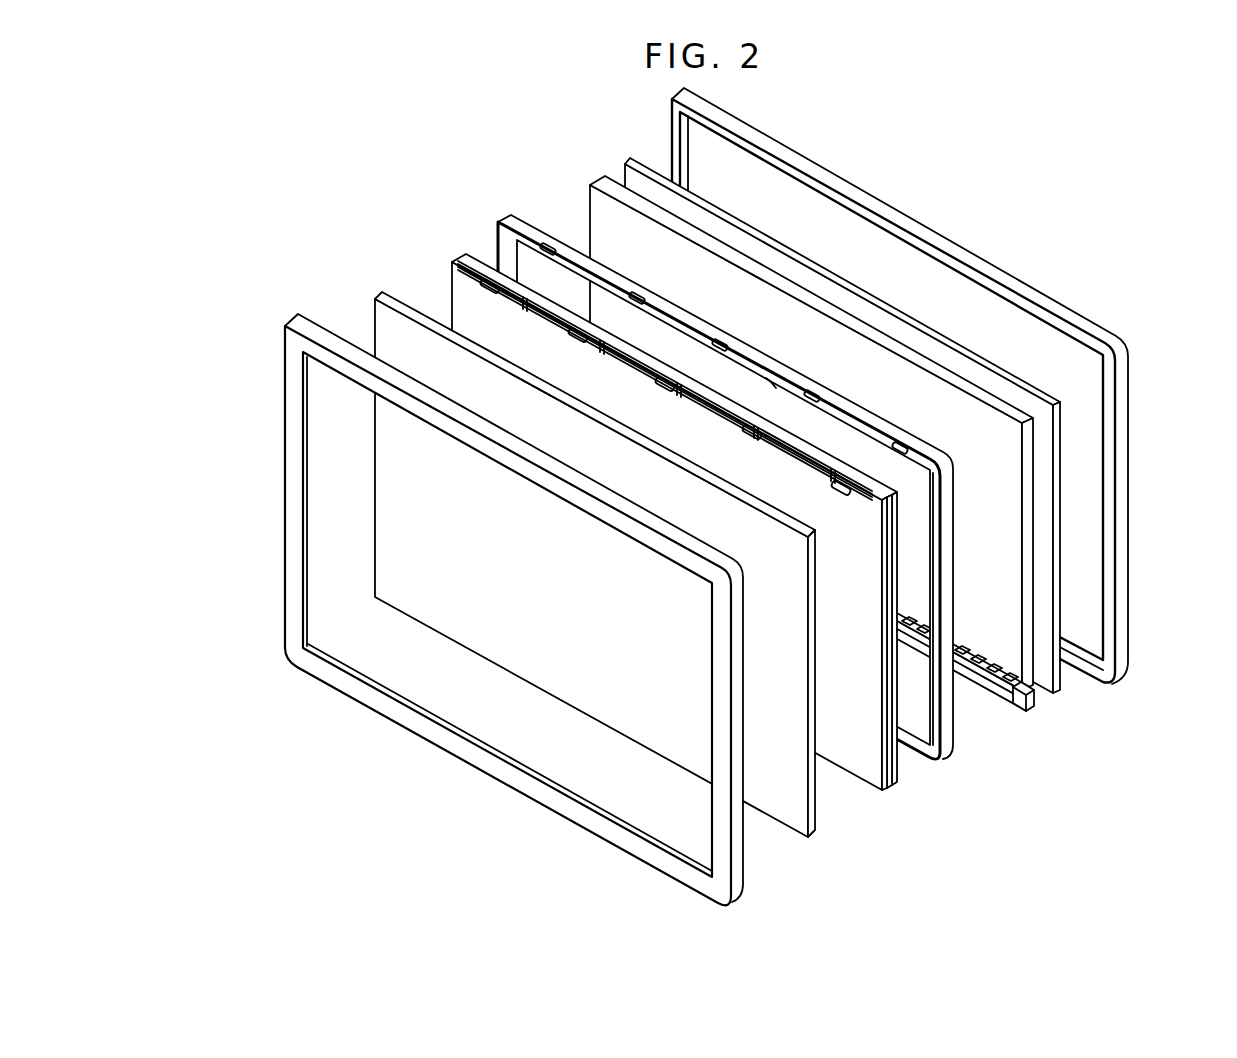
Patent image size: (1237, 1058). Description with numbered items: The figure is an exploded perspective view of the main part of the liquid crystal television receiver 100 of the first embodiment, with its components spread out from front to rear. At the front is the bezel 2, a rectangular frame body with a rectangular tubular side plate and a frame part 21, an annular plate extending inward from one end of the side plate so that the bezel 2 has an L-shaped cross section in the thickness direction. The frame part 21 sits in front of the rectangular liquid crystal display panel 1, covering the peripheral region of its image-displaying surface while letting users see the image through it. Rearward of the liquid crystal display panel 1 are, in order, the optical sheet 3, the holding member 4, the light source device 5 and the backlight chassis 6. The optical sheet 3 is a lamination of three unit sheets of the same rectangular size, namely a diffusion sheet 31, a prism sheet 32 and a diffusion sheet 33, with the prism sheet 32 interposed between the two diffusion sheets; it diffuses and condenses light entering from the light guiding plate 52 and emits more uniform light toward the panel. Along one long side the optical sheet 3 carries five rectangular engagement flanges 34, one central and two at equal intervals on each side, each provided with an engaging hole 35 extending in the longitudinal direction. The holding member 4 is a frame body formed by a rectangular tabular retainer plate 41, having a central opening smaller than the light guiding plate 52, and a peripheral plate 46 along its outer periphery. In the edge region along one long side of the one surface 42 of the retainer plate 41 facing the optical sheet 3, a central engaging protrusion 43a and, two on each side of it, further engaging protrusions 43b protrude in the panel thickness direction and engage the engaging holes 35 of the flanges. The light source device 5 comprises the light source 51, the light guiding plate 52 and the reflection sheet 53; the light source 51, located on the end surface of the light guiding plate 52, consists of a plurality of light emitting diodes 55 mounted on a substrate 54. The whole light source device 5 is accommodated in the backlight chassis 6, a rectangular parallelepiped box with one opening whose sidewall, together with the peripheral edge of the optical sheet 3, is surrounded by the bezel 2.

The liquid crystal television receiver 100 is at (322, 212).
The liquid crystal display panel 1 is at (794, 823).
The bezel 2 is at (470, 611).
The frame part 21 is at (286, 400).
The optical sheet 3 is at (788, 546).
The diffusion sheet 31 is at (897, 792).
The prism sheet 32 is at (890, 795).
The diffusion sheet 33 is at (883, 793).
The engagement flange 34 is at (460, 268).
The engaging hole 35 is at (494, 268).
The holding member 4 is at (830, 474).
The retainer plate 41 is at (792, 376).
The one surface of the retainer plate 42 is at (499, 221).
The central engaging protrusion 43a is at (721, 341).
The engaging protrusion 43b is at (635, 294).
The peripheral plate 46 is at (771, 382).
The light source device 5 is at (875, 515).
The light source 51 is at (976, 721).
The light guiding plate 52 is at (1028, 690).
The reflection sheet 53 is at (1060, 692).
The substrate 54 is at (1024, 708).
The light emitting diode 55 is at (995, 682).
The backlight chassis 6 is at (1123, 640).